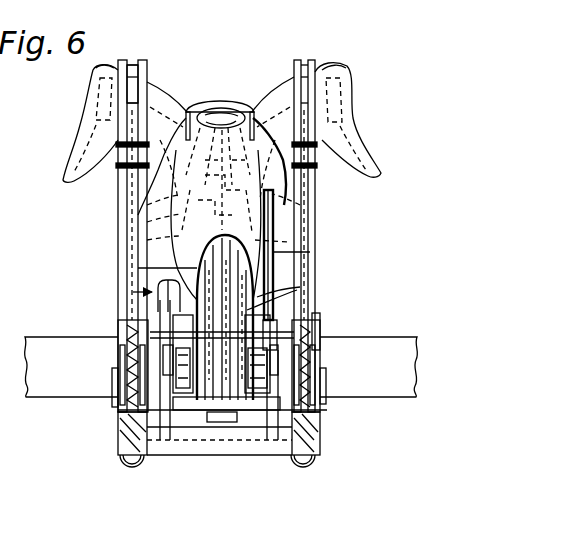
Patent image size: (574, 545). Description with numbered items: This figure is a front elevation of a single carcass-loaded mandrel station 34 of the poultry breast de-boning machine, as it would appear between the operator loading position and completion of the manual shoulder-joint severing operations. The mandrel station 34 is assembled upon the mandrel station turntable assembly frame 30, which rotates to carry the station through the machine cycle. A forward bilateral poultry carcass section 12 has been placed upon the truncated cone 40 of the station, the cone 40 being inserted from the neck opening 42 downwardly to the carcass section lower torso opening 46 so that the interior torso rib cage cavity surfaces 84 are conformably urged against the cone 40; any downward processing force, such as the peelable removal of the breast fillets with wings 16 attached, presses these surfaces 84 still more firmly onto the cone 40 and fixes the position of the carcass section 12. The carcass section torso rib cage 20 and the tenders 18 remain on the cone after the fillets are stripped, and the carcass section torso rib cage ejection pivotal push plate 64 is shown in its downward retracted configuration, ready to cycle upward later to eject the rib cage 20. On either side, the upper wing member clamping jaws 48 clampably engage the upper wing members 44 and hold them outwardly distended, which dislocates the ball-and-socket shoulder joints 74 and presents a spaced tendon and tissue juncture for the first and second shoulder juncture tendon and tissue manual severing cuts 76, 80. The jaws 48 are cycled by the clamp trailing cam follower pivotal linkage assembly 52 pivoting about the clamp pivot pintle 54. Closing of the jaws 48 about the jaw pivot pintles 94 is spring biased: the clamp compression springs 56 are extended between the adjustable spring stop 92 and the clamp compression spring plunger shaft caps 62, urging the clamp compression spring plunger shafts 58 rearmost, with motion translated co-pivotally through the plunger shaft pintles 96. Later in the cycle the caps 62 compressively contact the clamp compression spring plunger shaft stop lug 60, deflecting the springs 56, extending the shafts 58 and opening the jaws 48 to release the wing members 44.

The forward bilateral poultry carcass section 12 is at (213, 60).
The wings 16 is at (86, 109).
The tenders 18 is at (127, 207).
The carcass section torso rib cage 20 is at (127, 241).
The mandrel station turntable assembly frame 30 is at (396, 337).
The mandrel station 34 is at (349, 51).
The truncated cone 40 is at (290, 283).
The neck opening 42 is at (217, 105).
The upper wing members 44 is at (182, 66).
The carcass section lower torso opening 46 is at (127, 262).
The upper wing member clamping jaws 48 is at (110, 97).
The clamp trailing cam follower pivotal linkage assembly 52 is at (133, 294).
The clamp pivot pintle 54 is at (319, 356).
The clamp compression springs 56 is at (117, 364).
The clamp compression spring plunger shafts 58 is at (125, 259).
The clamp compression spring plunger shaft stop lug 60 is at (113, 380).
The clamp compression spring plunger shaft caps 62 is at (137, 470).
The carcass section torso rib cage ejection pivotal push plate 64 is at (300, 294).
The ball-and-socket shoulder joints 74 is at (127, 200).
The first shoulder juncture tendon and tissue manual severing cut 76 is at (192, 110).
The second shoulder juncture tendon and tissue manual severing cut 80 is at (260, 93).
The interior torso rib cage cavity surfaces 84 is at (127, 224).
The adjustable spring stop 92 is at (117, 328).
The jaw pivot pintles 94 is at (118, 147).
The plunger shaft pintles 96 is at (120, 166).